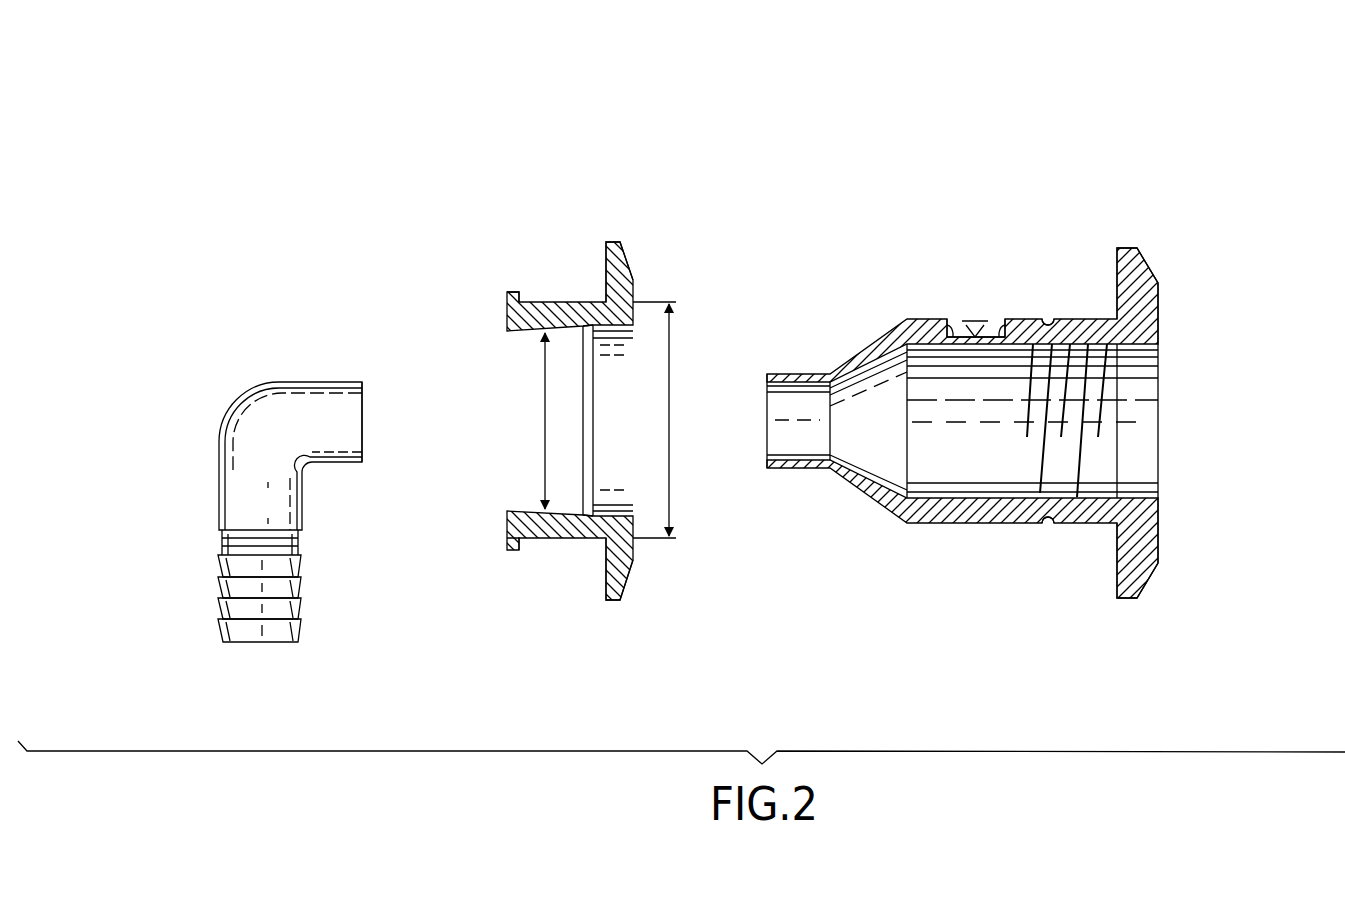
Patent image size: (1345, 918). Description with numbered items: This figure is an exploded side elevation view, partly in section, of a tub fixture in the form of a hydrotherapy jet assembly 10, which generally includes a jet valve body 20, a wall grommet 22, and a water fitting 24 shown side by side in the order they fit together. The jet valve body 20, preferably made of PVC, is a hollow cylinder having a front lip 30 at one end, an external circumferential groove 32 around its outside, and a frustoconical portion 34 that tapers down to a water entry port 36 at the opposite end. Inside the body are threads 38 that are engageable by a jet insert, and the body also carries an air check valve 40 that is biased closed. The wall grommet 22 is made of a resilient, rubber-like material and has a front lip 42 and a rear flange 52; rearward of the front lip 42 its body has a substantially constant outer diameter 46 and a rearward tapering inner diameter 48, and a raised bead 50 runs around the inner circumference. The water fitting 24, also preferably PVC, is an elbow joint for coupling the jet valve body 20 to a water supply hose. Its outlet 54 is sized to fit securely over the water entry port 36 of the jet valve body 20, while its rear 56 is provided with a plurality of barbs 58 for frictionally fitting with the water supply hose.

The hydrotherapy jet assembly 10 is at (853, 97).
The jet valve body 20 is at (1077, 228).
The wall grommet 22 is at (553, 233).
The water fitting 24 is at (284, 360).
The front lip 30 is at (1148, 257).
The external circumferential groove 32 is at (1048, 314).
The frustoconical portion 34 is at (872, 350).
The water entry port 36 is at (773, 427).
The threads 38 is at (1035, 490).
The air check valve 40 is at (958, 327).
The front lip 42 is at (622, 256).
The outer diameter 46 is at (671, 395).
The inner diameter 48 is at (545, 421).
The raised bead 50 is at (587, 343).
The rear flange 52 is at (510, 290).
The outlet 54 is at (379, 393).
The rear 56 is at (259, 654).
The barbs 58 is at (301, 624).